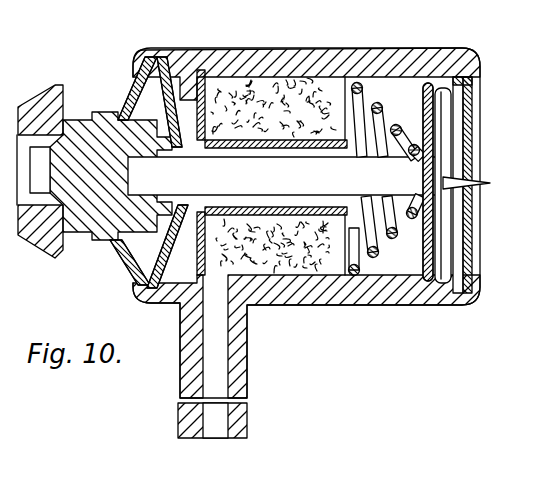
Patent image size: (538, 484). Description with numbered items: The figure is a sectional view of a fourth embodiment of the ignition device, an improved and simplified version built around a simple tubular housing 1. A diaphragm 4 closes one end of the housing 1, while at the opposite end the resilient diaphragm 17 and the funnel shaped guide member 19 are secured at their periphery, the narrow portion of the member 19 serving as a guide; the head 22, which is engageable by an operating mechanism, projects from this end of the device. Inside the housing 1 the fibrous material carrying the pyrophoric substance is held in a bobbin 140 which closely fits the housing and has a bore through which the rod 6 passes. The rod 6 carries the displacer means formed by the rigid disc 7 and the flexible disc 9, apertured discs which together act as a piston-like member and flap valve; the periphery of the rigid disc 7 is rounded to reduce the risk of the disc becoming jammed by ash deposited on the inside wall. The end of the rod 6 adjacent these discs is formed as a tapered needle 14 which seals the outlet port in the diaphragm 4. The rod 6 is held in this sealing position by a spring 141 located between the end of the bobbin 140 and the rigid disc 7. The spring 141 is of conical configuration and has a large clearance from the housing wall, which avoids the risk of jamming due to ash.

The housing 1 is at (300, 50).
The diaphragm 4 is at (472, 142).
The rod 6 is at (285, 176).
The rigid disc 7 is at (430, 78).
The flexible disc 9 is at (437, 115).
The tapered needle 14 is at (478, 200).
The resilient diaphragm 17 is at (166, 52).
The funnel shaped member 19 is at (122, 103).
The head 22 is at (43, 95).
The bobbin 140 is at (208, 75).
The spring 141 is at (394, 128).